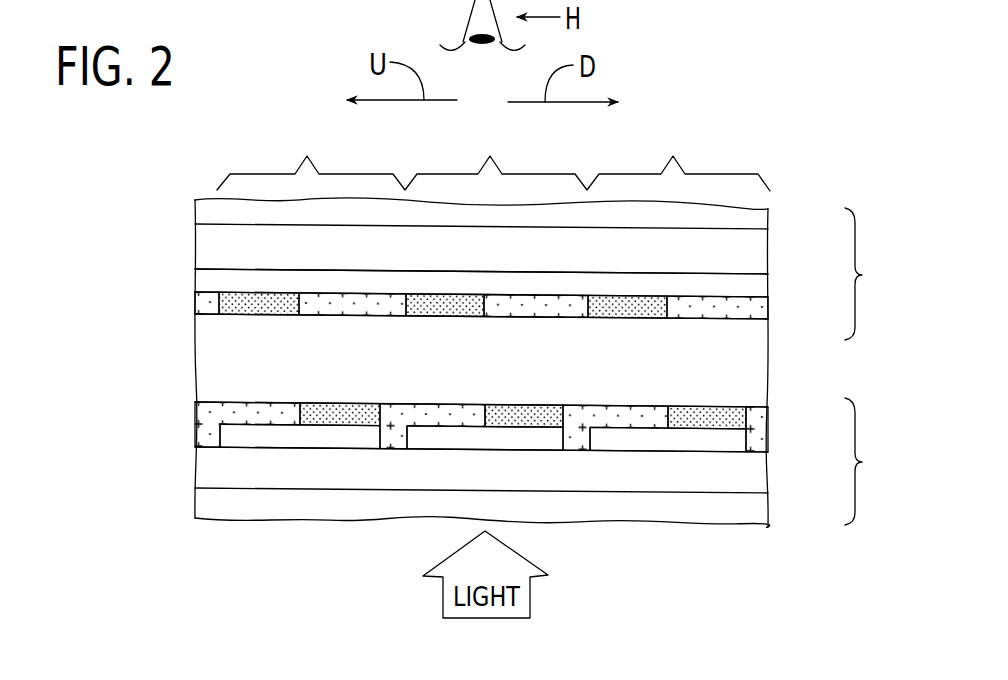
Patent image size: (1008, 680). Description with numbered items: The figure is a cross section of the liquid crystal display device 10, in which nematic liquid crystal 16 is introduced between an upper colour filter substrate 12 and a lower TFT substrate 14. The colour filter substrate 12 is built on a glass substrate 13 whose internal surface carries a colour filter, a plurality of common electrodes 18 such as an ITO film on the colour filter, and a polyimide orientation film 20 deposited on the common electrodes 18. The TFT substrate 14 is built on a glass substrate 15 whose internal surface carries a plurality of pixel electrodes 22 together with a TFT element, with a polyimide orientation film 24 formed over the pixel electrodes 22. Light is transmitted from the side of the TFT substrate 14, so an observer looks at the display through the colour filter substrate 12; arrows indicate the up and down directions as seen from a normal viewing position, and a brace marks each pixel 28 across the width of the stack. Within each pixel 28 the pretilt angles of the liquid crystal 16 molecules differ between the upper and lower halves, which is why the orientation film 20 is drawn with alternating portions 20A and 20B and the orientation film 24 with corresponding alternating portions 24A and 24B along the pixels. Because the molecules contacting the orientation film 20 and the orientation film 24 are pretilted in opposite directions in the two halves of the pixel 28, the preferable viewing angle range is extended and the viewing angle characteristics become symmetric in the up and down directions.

The liquid crystal display device 10 is at (132, 357).
The colour filter substrate 12 is at (869, 274).
The glass substrate 13 is at (757, 252).
The TFT substrate 14 is at (869, 461).
The glass substrate 15 is at (760, 472).
The nematic liquid crystal 16 is at (740, 375).
The common electrodes 18 is at (757, 282).
The polyimide orientation film 20 is at (517, 335).
The first alignment region of upper alignment layer 20A is at (447, 317).
The second alignment region of upper alignment layer 20B is at (528, 317).
The pixel electrodes 22 is at (733, 437).
The polyimide orientation film 24 is at (517, 395).
The first alignment region of lower alignment layer 24A is at (337, 400).
The second alignment region of lower alignment layer 24B is at (253, 400).
The pixel 28 is at (493, 156).